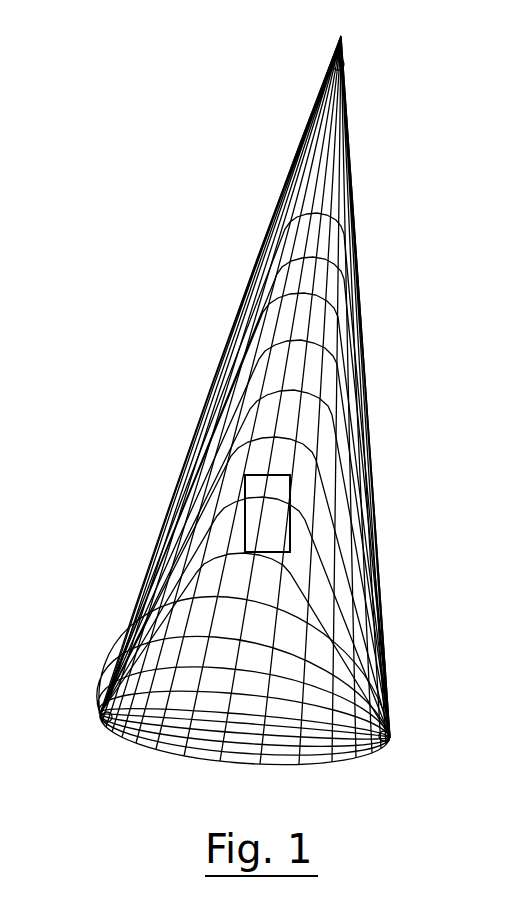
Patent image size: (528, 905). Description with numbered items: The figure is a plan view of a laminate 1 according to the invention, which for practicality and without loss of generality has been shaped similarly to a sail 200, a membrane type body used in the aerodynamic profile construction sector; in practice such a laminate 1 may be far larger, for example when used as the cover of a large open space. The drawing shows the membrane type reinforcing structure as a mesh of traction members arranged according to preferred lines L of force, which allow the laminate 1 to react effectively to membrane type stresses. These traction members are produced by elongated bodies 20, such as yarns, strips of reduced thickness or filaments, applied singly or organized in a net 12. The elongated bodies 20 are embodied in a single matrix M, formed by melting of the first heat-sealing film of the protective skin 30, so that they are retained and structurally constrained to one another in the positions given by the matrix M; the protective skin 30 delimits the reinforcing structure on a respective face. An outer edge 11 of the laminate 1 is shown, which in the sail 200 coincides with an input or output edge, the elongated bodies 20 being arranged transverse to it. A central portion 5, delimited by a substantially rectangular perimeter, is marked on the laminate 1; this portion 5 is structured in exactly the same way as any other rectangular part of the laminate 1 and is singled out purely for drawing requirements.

The laminate 1 is at (267, 428).
The sail 200 is at (277, 428).
The protective skin 30 is at (263, 400).
The lines of force L is at (360, 390).
The matrix M is at (355, 208).
The outer edge 11 is at (184, 384).
The elongated bodies 20 is at (360, 660).
The net 12 is at (228, 462).
The central portion 5 is at (250, 488).